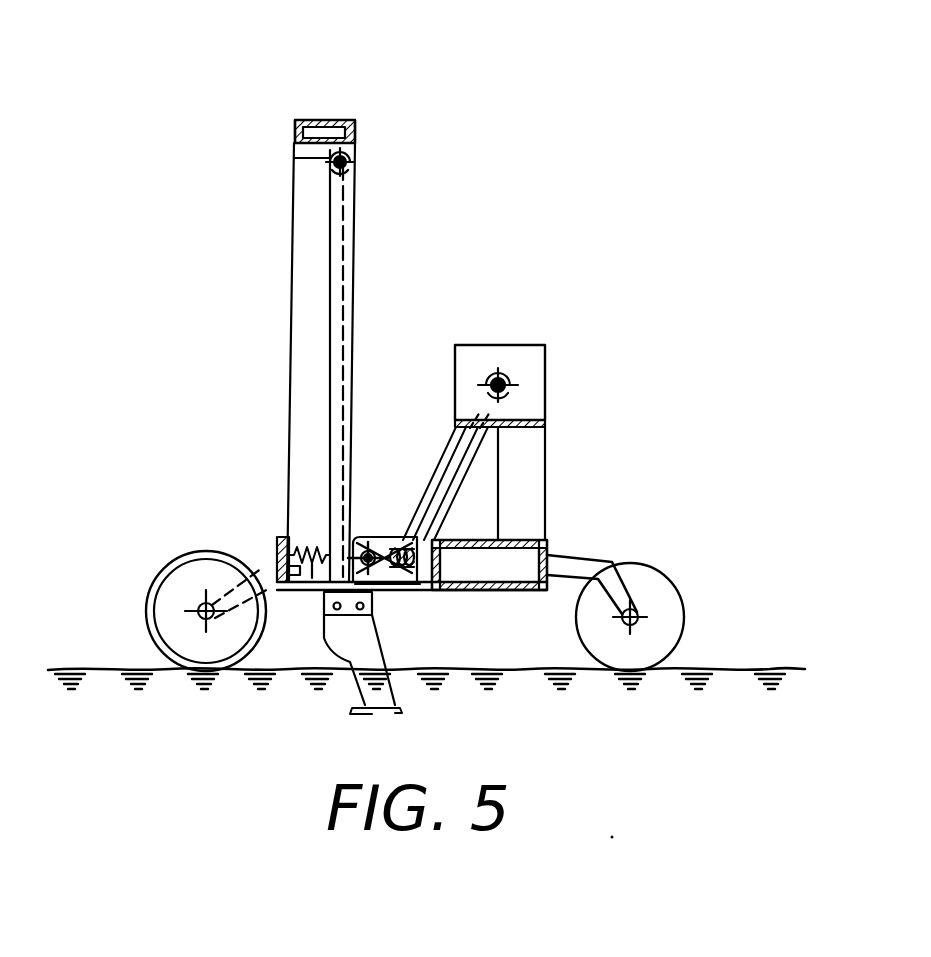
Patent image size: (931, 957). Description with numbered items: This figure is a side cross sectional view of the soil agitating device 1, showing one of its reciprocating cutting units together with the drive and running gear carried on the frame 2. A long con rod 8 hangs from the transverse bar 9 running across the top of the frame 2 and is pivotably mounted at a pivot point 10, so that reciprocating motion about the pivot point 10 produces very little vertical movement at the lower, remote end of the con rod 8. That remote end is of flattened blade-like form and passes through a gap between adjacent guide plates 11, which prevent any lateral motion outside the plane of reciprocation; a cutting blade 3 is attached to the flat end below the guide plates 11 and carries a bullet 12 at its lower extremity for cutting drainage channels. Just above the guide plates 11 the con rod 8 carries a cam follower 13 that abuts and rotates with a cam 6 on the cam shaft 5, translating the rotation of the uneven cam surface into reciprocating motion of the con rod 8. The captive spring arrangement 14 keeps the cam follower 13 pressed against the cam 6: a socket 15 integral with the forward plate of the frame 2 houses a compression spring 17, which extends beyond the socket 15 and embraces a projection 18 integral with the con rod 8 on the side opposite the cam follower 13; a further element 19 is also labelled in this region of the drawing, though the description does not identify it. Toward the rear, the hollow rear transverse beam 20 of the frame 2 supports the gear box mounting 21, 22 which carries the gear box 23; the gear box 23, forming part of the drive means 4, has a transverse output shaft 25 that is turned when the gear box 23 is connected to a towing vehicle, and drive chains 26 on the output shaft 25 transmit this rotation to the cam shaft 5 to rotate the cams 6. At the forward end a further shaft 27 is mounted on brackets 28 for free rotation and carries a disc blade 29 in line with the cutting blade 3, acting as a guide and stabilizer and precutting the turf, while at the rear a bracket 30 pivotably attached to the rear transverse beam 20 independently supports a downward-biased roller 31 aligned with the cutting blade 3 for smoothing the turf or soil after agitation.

The agitating device 1 is at (272, 108).
The frame 2 is at (300, 283).
The cutting blade 3 is at (367, 640).
The drive means 4 is at (565, 390).
The cam shaft 5 is at (413, 588).
The cam 6 is at (393, 545).
The con rod 8 is at (338, 278).
The transverse bar 9 is at (355, 120).
The pivot point 10 is at (350, 160).
The guide plate 11 is at (310, 591).
The bullet 12 is at (400, 708).
The cam follower 13 is at (383, 545).
The captive spring arrangement 14 is at (300, 525).
The socket 15 is at (298, 543).
The compression spring 17 is at (290, 558).
The projection 18 is at (315, 591).
The guide slot 19 is at (312, 526).
The rear transverse beam 20 is at (548, 592).
The gear box mounting 21 is at (545, 480).
The gear box mounting 22 is at (545, 424).
The gear box 23 is at (547, 345).
The output shaft 25 is at (499, 383).
The drive chain 26 is at (462, 478).
The further shaft 27 is at (200, 610).
The bracket 28 is at (258, 562).
The disc blade 29 is at (190, 575).
The bracket 30 is at (612, 563).
The roller 31 is at (657, 596).